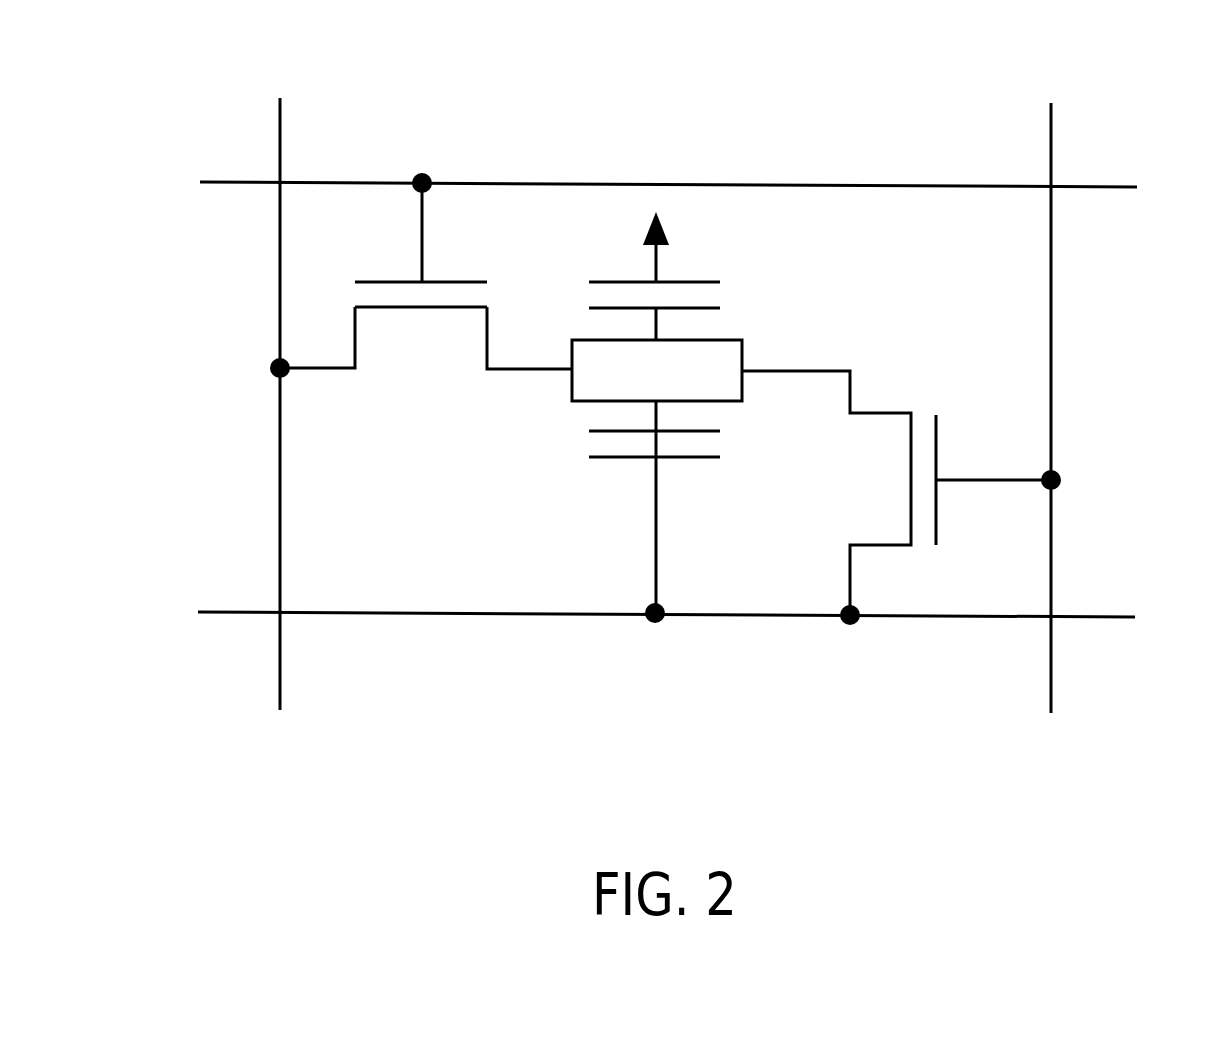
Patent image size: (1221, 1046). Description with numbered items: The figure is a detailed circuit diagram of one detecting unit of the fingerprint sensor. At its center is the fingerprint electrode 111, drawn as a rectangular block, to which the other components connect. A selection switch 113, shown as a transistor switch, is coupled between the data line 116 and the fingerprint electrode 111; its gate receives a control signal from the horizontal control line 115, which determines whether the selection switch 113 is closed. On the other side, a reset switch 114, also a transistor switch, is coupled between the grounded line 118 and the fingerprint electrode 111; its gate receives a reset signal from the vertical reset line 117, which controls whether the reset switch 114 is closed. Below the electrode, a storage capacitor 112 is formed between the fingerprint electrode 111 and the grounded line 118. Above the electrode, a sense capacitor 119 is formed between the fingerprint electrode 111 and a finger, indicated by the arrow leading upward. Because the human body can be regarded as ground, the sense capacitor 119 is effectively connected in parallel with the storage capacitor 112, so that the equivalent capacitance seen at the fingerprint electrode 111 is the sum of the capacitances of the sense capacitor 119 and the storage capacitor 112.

The fingerprint electrode 111 is at (743, 344).
The storage capacitor 112 is at (692, 458).
The selection switch 113 is at (440, 308).
The reset switch 114 is at (912, 437).
The control line 115 is at (215, 182).
The data line 116 is at (281, 120).
The reset line 117 is at (1052, 140).
The grounded line 118 is at (1087, 615).
The sense capacitor 119 is at (698, 282).